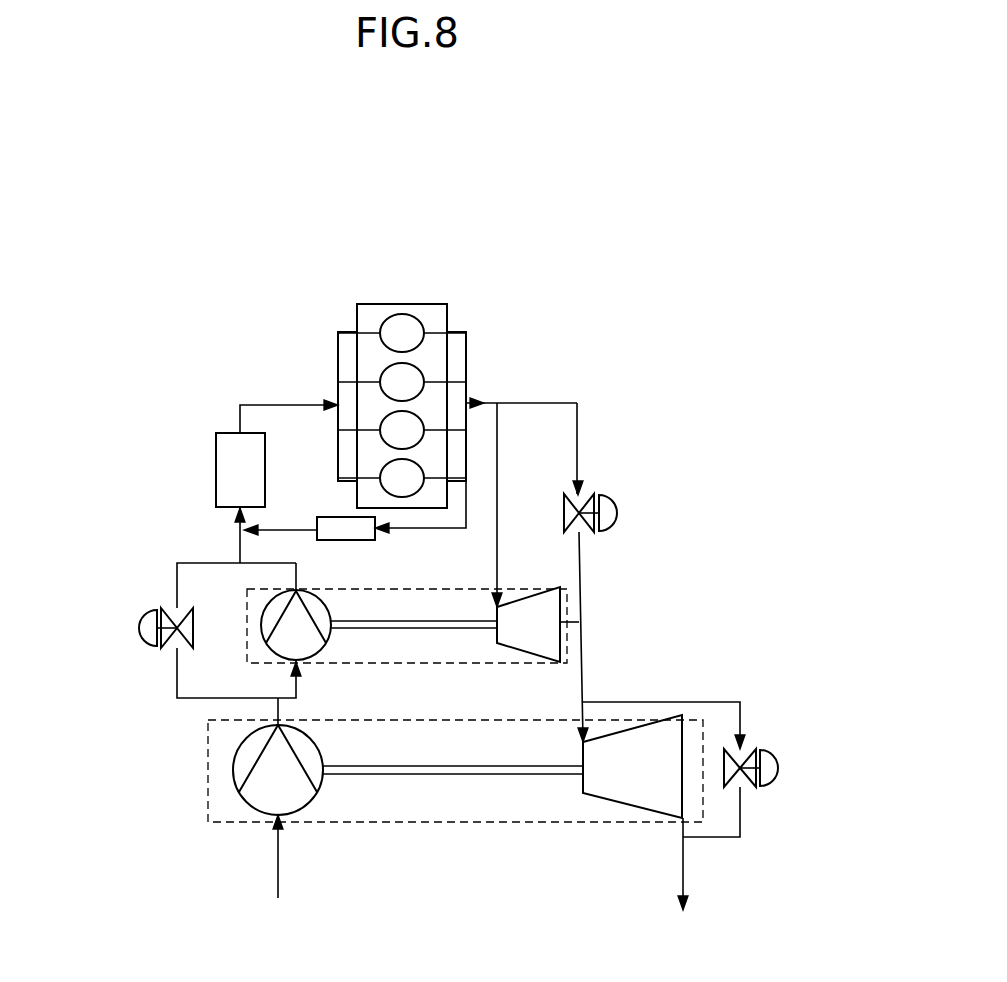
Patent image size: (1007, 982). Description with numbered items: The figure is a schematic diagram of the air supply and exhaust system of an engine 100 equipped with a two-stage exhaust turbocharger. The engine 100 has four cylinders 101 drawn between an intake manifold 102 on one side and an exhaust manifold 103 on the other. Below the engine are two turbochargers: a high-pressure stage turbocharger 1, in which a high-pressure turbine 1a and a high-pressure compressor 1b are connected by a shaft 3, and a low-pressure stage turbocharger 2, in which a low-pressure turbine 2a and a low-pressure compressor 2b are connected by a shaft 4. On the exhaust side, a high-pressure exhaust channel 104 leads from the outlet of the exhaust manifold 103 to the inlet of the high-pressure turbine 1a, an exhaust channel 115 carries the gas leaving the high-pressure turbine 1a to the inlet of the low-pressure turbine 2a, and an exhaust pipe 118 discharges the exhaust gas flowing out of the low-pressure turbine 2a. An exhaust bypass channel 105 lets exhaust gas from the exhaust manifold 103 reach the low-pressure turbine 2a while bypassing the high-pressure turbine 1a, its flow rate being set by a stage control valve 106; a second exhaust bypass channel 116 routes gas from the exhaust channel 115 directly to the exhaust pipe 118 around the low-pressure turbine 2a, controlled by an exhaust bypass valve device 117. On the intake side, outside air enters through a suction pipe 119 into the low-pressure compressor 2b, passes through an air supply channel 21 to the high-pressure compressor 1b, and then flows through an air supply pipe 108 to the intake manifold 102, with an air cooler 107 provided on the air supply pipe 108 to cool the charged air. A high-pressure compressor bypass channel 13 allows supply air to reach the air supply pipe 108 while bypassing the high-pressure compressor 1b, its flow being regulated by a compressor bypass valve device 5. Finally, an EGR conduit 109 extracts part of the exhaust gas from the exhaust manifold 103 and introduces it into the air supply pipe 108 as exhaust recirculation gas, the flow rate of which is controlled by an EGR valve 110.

The engine 100 is at (442, 296).
The cylinders 101 is at (400, 312).
The intake manifold 102 is at (338, 333).
The exhaust manifold 103 is at (466, 333).
The high-pressure exhaust channel 104 is at (497, 450).
The exhaust bypass channel 105 is at (545, 403).
The stage control valve 106 is at (617, 513).
The air cooler 107 is at (216, 465).
The air supply pipe 108 is at (274, 405).
The EGR conduit 109 is at (290, 528).
The EGR valve 110 is at (317, 538).
The high-pressure stage turbocharger 1 is at (450, 582).
The high-pressure turbine 1a is at (540, 640).
The high-pressure compressor 1b is at (262, 628).
The shaft 3 is at (400, 621).
The high-pressure compressor bypass channel 13 is at (177, 582).
The compressor bypass valve device 5 is at (138, 628).
The exhaust channel 115 is at (583, 675).
The exhaust bypass channel 116 is at (740, 712).
The exhaust bypass valve device 117 is at (779, 768).
The exhaust pipe 118 is at (683, 862).
The suction pipe 119 is at (278, 862).
The low-pressure stage turbocharger 2 is at (515, 835).
The low-pressure turbine 2a is at (625, 806).
The low-pressure compressor 2b is at (266, 795).
The shaft 4 is at (420, 775).
The air supply channel 21 is at (280, 710).